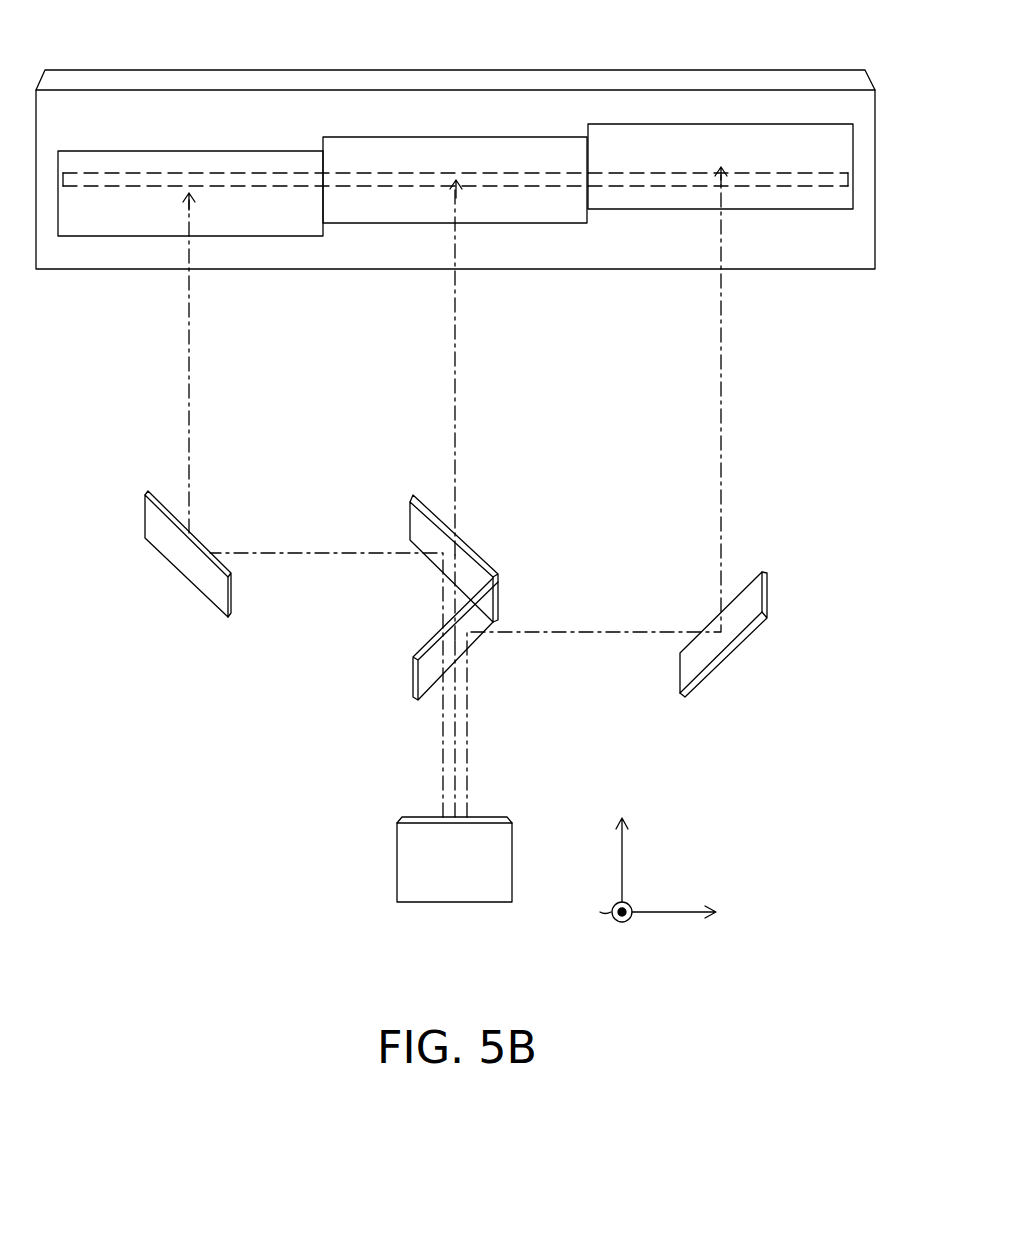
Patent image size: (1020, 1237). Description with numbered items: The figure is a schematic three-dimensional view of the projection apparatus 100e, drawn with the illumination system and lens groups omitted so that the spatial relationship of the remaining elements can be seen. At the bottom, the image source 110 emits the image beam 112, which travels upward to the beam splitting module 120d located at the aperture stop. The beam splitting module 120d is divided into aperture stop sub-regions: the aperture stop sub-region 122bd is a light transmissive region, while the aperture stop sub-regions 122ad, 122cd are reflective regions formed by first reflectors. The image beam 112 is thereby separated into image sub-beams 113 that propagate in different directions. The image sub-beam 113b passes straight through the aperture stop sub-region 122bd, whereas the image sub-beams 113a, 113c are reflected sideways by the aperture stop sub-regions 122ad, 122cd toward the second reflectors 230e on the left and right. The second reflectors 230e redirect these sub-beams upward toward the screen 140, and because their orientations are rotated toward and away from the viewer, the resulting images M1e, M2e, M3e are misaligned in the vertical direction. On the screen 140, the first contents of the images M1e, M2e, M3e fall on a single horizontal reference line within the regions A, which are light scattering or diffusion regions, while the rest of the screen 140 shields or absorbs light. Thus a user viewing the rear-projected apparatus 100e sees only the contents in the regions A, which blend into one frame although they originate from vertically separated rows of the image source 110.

The projection apparatus 100e is at (455, 490).
The screen 140 is at (823, 89).
The image M1e is at (193, 151).
The image M2e is at (452, 137).
The image M3e is at (731, 124).
The regions A is at (107, 170).
The image source 110 is at (498, 898).
The image beam 112 is at (245, 728).
The image sub-beams 113 is at (514, 506).
The image sub-beam 113a is at (190, 320).
The image sub-beam 113b is at (458, 320).
The image sub-beam 113c is at (723, 320).
The second reflectors 230e is at (146, 528).
The beam splitting module 120d is at (270, 600).
The aperture stop sub-region 122ad is at (440, 563).
The aperture stop sub-region 122bd is at (424, 613).
The aperture stop sub-region 122cd is at (418, 668).